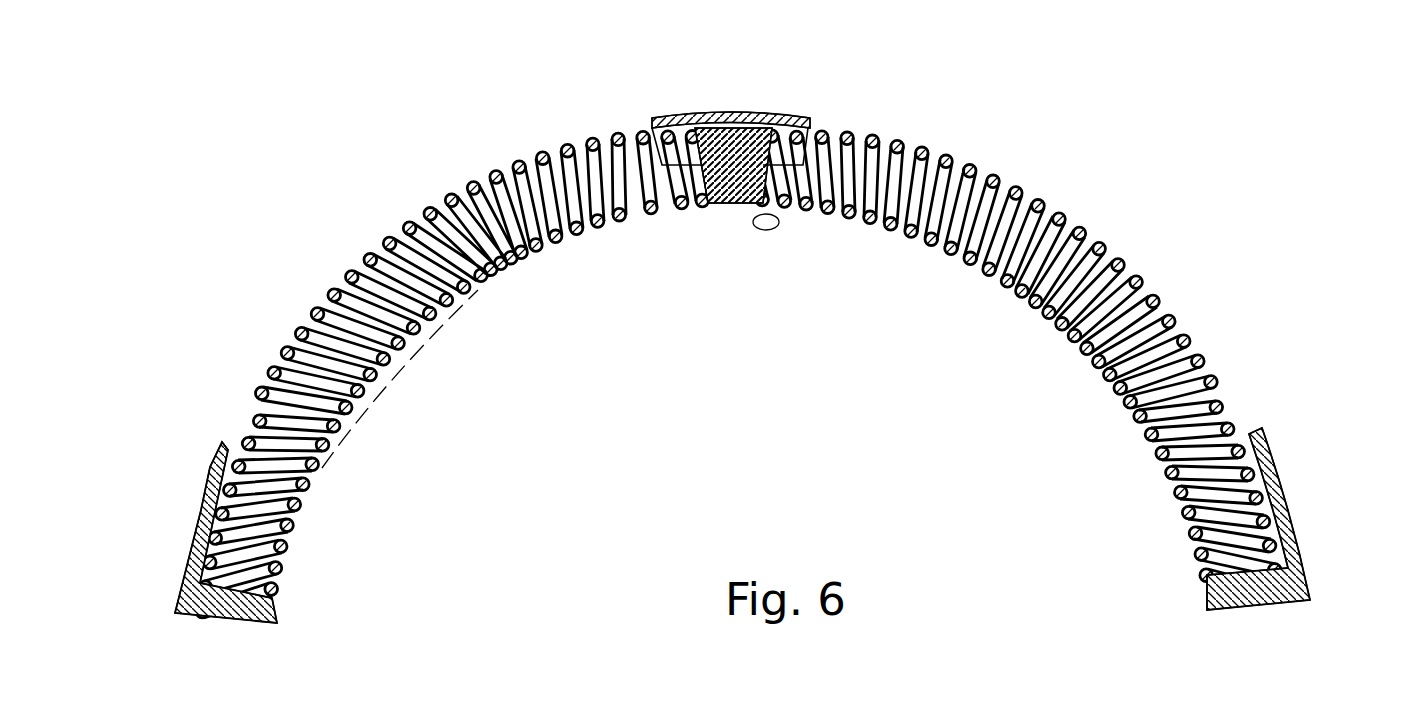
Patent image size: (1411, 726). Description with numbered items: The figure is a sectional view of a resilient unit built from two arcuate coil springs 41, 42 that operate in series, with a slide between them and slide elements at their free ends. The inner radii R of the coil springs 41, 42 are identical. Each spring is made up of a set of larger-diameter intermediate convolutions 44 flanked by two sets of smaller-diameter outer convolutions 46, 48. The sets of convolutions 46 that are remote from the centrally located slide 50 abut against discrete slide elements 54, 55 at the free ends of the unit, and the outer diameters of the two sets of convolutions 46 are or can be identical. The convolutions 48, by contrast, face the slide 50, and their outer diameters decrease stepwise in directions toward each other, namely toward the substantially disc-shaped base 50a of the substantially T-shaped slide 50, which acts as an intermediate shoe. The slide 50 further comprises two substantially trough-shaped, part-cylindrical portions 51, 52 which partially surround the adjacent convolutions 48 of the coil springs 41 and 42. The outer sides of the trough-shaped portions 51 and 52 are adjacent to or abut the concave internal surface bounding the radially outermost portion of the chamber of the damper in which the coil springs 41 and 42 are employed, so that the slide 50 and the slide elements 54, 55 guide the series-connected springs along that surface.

The arcuate coil spring 41 is at (492, 351).
The arcuate coil spring 42 is at (992, 316).
The intermediate convolutions 44 is at (332, 290).
The outer convolutions 46 is at (232, 450).
The outer convolutions 48 is at (648, 212).
The slide 50 is at (733, 157).
The base 50a is at (735, 180).
The trough-shaped portion 51 is at (675, 117).
The trough-shaped portion 52 is at (782, 117).
The slide element 54 is at (172, 516).
The slide element 55 is at (1333, 512).
The inner radius R is at (391, 413).